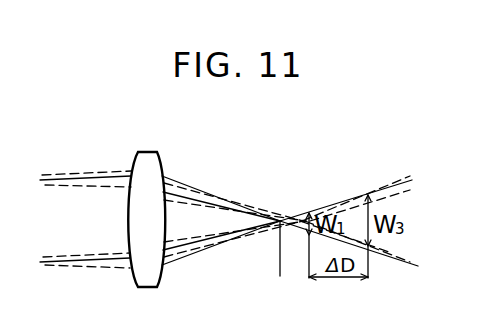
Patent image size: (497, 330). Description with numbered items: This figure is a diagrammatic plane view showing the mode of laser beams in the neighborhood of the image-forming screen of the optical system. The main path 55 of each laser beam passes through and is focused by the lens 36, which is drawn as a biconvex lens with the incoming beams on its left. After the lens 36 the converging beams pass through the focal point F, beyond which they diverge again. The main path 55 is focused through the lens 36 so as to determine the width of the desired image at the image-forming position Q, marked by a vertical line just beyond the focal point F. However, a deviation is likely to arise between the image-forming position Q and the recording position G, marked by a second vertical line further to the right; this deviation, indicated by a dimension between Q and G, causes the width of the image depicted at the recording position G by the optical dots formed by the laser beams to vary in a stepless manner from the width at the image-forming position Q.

The lens 36 is at (147, 151).
The main path 55 is at (175, 193).
The focal point F is at (278, 266).
The image-forming position Q is at (310, 262).
The recording position G is at (369, 253).